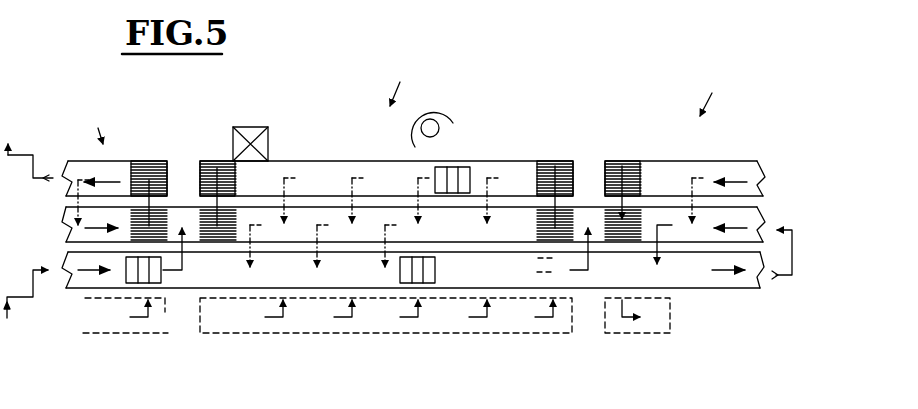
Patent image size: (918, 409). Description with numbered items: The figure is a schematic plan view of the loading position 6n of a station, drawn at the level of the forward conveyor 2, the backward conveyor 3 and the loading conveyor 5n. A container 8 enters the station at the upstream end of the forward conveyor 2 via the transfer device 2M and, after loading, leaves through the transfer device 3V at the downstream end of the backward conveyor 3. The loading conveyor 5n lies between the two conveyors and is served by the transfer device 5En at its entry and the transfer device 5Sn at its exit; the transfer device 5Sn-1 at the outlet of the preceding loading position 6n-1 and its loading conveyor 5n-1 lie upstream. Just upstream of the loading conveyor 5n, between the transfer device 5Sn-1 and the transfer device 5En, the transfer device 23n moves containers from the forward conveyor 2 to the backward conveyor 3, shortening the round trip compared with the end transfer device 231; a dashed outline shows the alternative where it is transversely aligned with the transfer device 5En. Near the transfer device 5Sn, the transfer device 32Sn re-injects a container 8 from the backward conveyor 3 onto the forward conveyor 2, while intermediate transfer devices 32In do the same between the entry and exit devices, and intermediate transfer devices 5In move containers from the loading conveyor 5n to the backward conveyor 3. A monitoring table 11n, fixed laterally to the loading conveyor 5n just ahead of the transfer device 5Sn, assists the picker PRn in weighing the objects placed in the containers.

The forward conveyor 2 is at (685, 265).
The backward conveyor 3 is at (760, 216).
The transfer device 2M is at (20, 298).
The transfer device 3V is at (23, 153).
The loading conveyor 5n is at (350, 161).
The loading conveyor 5n-1 is at (740, 168).
The transfer device 5Sn is at (220, 162).
The transfer device 5En is at (557, 161).
The transfer device 5Sn-1 is at (622, 161).
The intermediate transfer device 5In is at (286, 178).
The loading position 6n is at (406, 86).
The loading position 6n-1 is at (723, 99).
The container 8 is at (455, 160).
The monitoring table 11n is at (266, 140).
The picker PRn is at (432, 120).
The transfer device 23n is at (590, 265).
The transfer device 231 is at (795, 268).
The transfer device 32Sn is at (248, 260).
The intermediate transfer device 32In is at (318, 262).